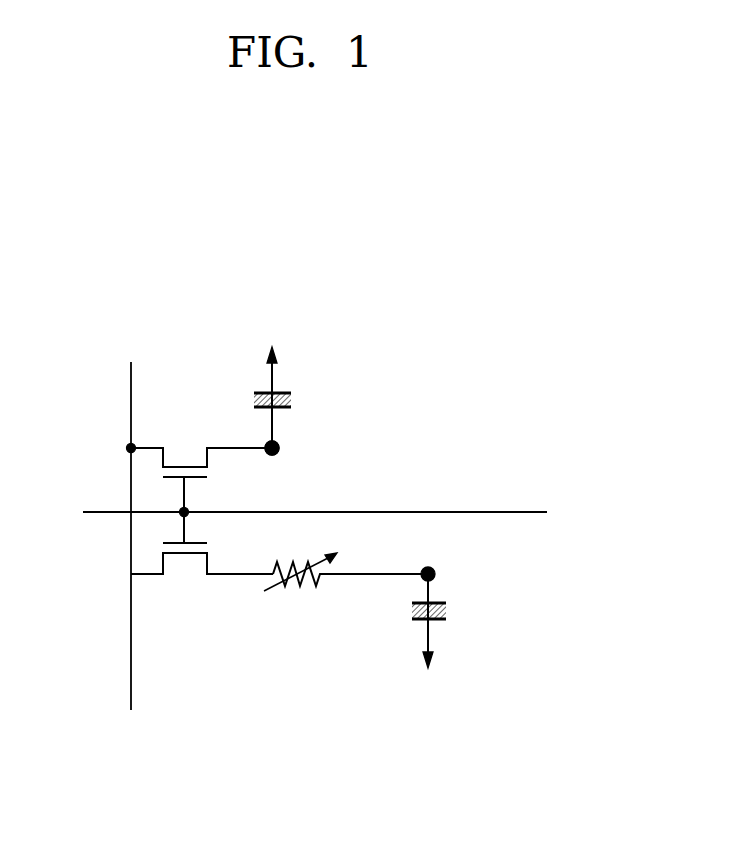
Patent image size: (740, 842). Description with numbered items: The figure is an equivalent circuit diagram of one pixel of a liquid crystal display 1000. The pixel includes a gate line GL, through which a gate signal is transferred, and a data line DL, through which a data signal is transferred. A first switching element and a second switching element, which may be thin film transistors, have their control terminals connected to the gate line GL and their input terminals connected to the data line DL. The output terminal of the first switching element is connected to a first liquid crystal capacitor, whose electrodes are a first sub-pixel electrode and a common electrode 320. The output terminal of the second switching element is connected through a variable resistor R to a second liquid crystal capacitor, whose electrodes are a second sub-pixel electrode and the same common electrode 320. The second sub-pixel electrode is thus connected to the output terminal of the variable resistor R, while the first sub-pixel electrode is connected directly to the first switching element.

The liquid crystal display 1000 is at (535, 312).
The common electrode 320 is at (291, 393).
The variable resistor R is at (346, 558).
The gate line GL is at (300, 512).
The data line DL is at (132, 552).